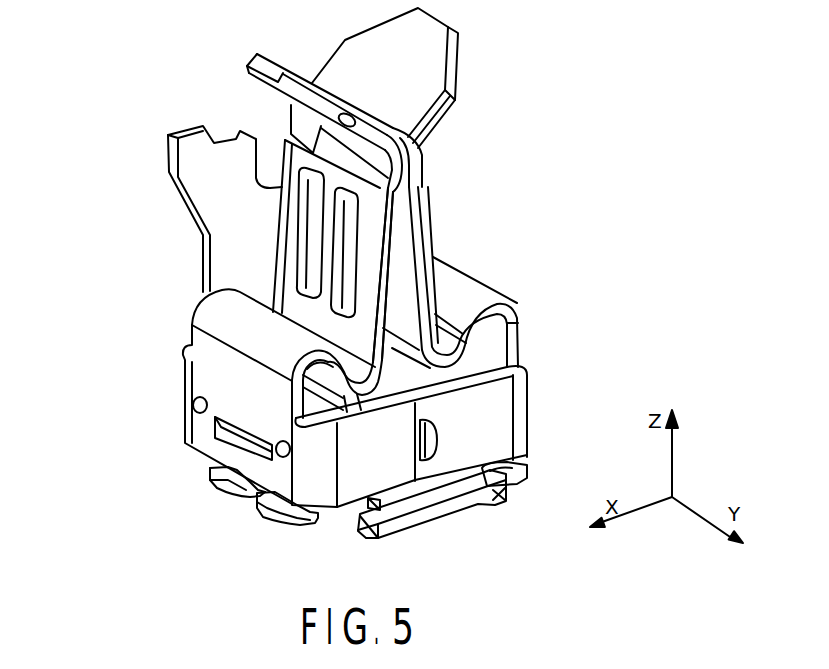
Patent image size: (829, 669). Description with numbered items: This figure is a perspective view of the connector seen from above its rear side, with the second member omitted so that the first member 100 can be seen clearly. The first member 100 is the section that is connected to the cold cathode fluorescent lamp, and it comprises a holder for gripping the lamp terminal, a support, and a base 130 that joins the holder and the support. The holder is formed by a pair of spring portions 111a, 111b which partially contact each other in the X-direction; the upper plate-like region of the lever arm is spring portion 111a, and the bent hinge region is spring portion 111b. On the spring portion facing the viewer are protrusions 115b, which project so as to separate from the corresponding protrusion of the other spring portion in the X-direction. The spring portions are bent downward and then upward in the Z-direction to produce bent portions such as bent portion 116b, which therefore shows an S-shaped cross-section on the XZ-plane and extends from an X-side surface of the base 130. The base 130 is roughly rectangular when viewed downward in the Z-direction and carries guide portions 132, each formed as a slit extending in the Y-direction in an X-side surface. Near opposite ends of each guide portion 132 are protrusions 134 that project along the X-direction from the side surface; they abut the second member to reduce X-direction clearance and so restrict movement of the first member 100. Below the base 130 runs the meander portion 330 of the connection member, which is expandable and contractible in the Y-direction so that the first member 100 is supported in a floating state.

The first member 100 is at (336, 293).
The spring portion 111a is at (425, 124).
The spring portion 111b is at (415, 152).
The protrusion 115b is at (342, 253).
The bent portion 116b is at (477, 290).
The base 130 is at (522, 416).
The guide portion 132 is at (250, 447).
The protrusion 134 is at (193, 405).
The meander portion 330 is at (443, 507).